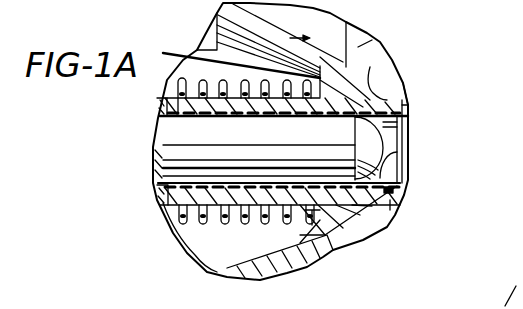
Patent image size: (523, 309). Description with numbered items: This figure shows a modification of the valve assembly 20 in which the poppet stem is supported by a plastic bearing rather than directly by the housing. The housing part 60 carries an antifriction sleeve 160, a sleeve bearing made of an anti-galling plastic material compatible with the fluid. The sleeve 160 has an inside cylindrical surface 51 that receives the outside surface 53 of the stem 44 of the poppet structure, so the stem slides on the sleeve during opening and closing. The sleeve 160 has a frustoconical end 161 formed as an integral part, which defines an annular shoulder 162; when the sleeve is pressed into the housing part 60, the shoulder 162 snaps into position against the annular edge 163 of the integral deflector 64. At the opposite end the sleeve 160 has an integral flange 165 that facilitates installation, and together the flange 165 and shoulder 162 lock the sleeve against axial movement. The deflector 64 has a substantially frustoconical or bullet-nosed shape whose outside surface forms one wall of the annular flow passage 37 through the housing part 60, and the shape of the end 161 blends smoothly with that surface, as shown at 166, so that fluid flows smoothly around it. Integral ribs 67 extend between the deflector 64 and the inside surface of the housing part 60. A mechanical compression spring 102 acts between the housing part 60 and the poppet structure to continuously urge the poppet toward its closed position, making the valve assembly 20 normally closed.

The valve assembly 20 is at (466, 295).
The annular flow passage 37 is at (360, 44).
The stem 44 is at (156, 133).
The inside cylindrical surface 51 is at (408, 163).
The outside surface 53 is at (178, 153).
The housing part 60 is at (363, 19).
The integral deflector 64 is at (360, 243).
The integral ribs 67 is at (215, 11).
The mechanical compression spring 102 is at (193, 230).
The antifriction sleeve 160 is at (412, 118).
The frustoconical end 161 is at (412, 97).
The annular shoulder 162 is at (378, 62).
The annular edge 163 is at (396, 191).
The integral flange 165 is at (158, 205).
The blend region 166 is at (390, 198).